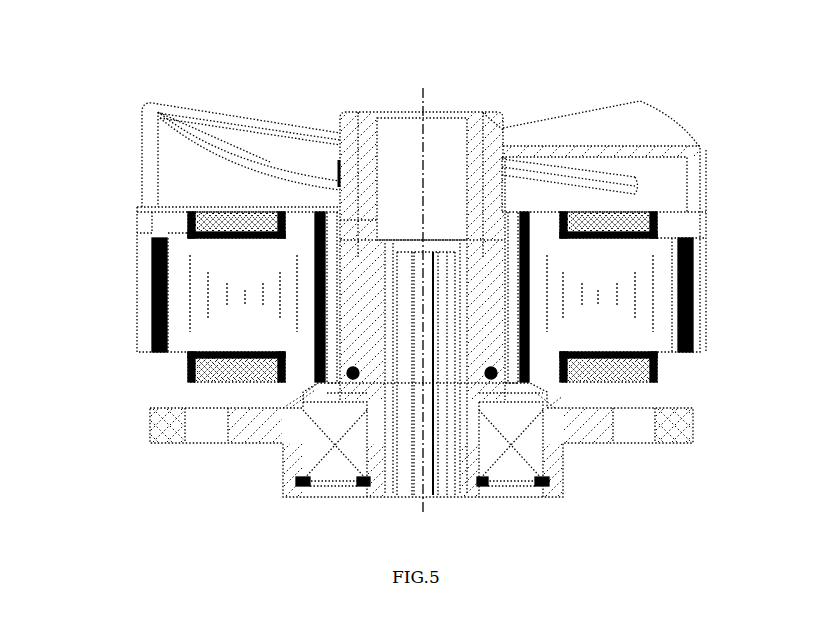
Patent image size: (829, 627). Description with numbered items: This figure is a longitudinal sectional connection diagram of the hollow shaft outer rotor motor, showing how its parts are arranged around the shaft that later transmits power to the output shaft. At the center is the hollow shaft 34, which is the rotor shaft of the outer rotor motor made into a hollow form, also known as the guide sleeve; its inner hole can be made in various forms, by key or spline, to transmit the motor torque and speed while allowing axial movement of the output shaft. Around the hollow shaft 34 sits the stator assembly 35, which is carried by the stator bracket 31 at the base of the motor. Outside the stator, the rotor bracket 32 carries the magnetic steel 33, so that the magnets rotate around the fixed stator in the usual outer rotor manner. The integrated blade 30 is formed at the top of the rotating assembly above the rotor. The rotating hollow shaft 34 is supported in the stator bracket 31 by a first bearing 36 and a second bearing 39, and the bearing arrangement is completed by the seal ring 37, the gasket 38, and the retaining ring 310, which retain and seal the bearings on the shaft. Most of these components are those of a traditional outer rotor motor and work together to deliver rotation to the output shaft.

The integrated blade 30 is at (192, 85).
The stator bracket 31 is at (152, 422).
The rotor bracket 32 is at (140, 316).
The magnetic steel 33 is at (143, 233).
The hollow shaft 34 is at (500, 98).
The stator assembly 35 is at (632, 213).
The bearing 1 36 is at (532, 318).
The seal ring 37 is at (548, 366).
The gasket 38 is at (792, 331).
The bearing 2 39 is at (797, 405).
The retaining ring 310 is at (563, 483).